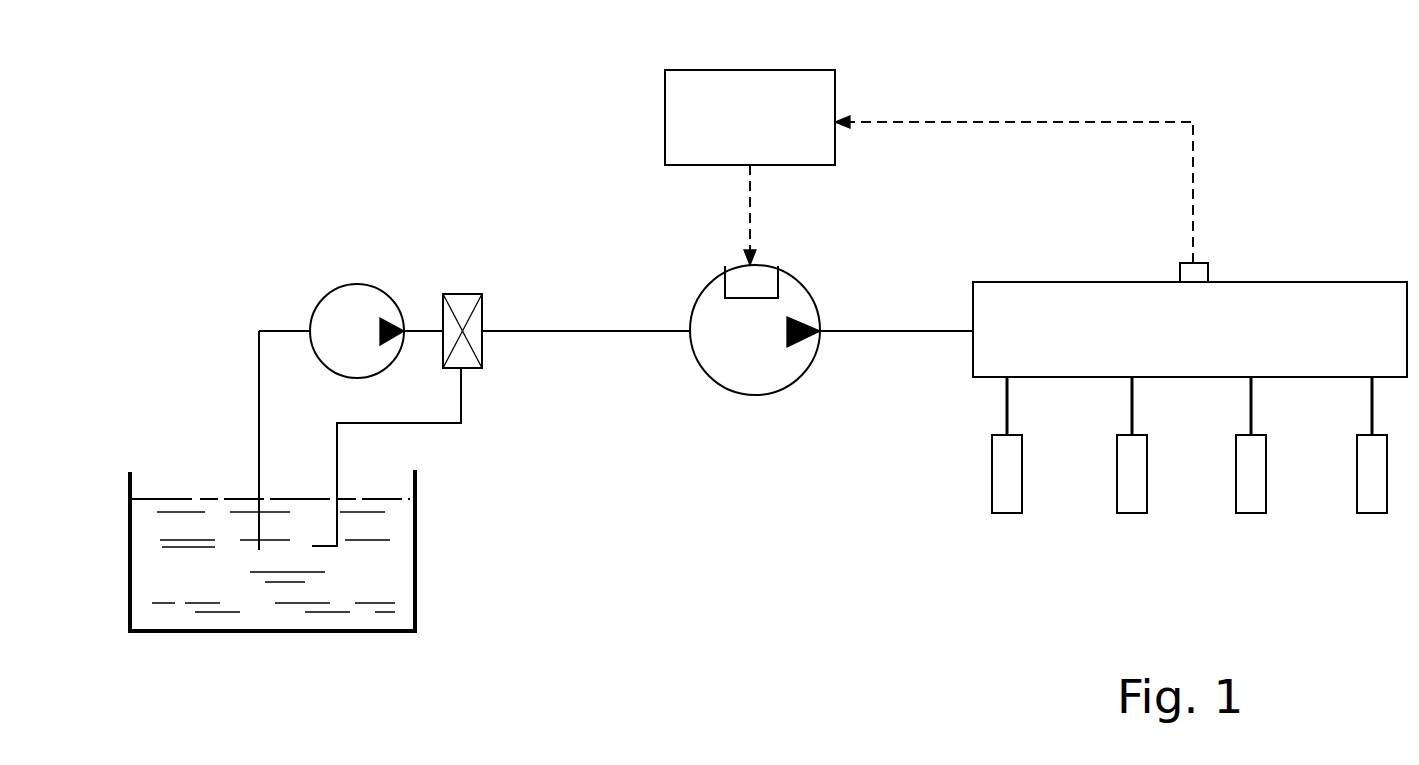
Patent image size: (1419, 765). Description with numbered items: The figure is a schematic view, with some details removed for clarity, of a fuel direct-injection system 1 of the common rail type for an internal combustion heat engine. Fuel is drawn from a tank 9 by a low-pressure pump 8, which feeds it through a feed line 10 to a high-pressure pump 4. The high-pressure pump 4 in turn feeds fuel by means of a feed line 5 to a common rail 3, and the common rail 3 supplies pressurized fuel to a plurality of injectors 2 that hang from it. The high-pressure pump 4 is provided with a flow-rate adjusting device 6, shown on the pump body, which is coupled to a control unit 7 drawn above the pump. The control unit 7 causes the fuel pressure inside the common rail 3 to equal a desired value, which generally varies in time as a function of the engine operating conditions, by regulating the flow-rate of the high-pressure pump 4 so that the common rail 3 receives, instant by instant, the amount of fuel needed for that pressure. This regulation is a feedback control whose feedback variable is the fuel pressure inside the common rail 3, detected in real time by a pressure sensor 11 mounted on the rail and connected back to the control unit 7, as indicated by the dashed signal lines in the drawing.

The fuel direct-injection system 1 is at (657, 668).
The injectors 2 is at (1009, 505).
The common rail 3 is at (1332, 300).
The high-pressure pump 4 is at (718, 355).
The feed line 5 is at (885, 332).
The flow-rate adjusting device 6 is at (763, 278).
The control unit 7 is at (755, 88).
The low-pressure pump 8 is at (350, 295).
The tank 9 is at (398, 593).
The feed line 10 is at (567, 332).
The pressure sensor 11 is at (1200, 272).